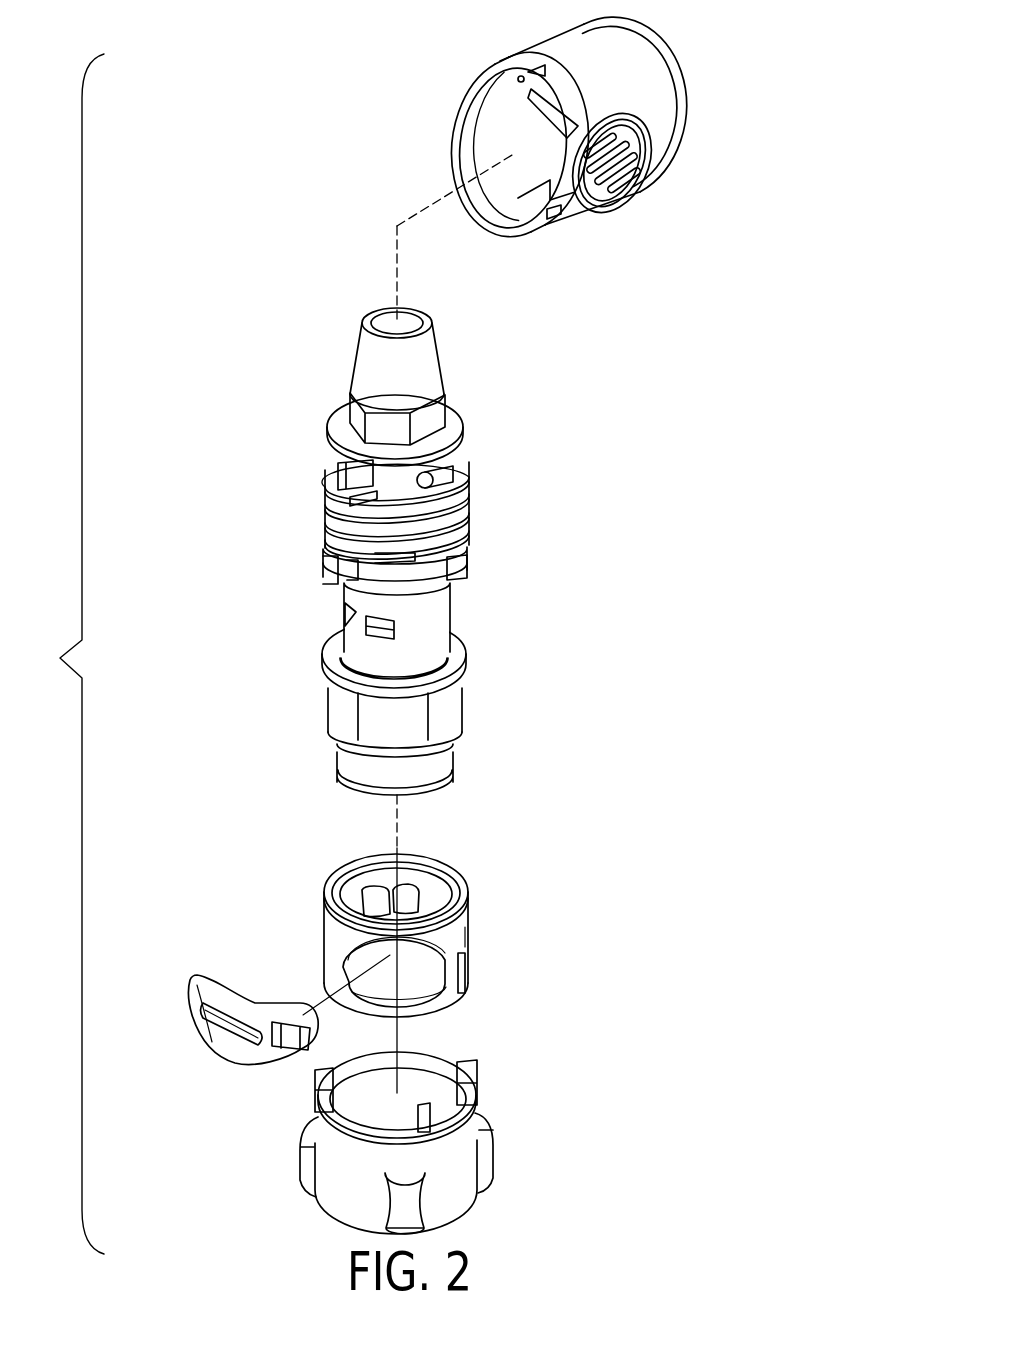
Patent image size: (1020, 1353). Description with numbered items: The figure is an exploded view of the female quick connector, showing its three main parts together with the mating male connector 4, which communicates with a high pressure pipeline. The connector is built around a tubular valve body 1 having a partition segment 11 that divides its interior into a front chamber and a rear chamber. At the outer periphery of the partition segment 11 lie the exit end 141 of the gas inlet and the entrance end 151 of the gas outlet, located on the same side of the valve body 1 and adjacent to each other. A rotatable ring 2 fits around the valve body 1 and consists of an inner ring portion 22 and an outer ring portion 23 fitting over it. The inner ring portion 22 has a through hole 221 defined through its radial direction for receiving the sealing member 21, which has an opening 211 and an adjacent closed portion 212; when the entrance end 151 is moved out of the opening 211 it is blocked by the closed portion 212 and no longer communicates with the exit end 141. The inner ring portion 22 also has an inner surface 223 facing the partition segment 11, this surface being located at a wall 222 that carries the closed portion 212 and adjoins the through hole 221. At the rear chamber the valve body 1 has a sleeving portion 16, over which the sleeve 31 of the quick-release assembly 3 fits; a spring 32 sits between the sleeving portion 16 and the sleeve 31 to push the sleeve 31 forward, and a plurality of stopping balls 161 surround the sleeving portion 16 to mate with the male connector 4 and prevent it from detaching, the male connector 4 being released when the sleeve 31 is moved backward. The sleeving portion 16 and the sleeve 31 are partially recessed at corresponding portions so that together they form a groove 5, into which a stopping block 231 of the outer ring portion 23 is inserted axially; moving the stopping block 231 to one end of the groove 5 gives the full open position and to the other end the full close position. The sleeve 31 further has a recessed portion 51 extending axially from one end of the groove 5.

The valve body 1 is at (401, 551).
The rotatable ring 2 is at (331, 1044).
The quick-release assembly 3 is at (532, 128).
The male connector 4 is at (430, 362).
The groove 5 is at (474, 156).
The partition segment 11 is at (415, 606).
The sleeving portion 16 is at (343, 472).
The sealing member 21 is at (215, 1050).
The inner ring portion 22 is at (402, 945).
The outer ring portion 23 is at (424, 1122).
The sleeve 31 is at (522, 44).
The spring 32 is at (336, 478).
The recessed portion 51 is at (548, 198).
The exit end 141 is at (347, 612).
The entrance end 151 is at (382, 633).
The stopping balls 161 is at (340, 430).
The opening 211 is at (190, 1032).
The closed portion 212 is at (295, 1042).
The through hole 221 is at (418, 985).
The wall 222 is at (462, 946).
The inner surface 223 is at (392, 950).
The stopping block 231 is at (323, 1070).